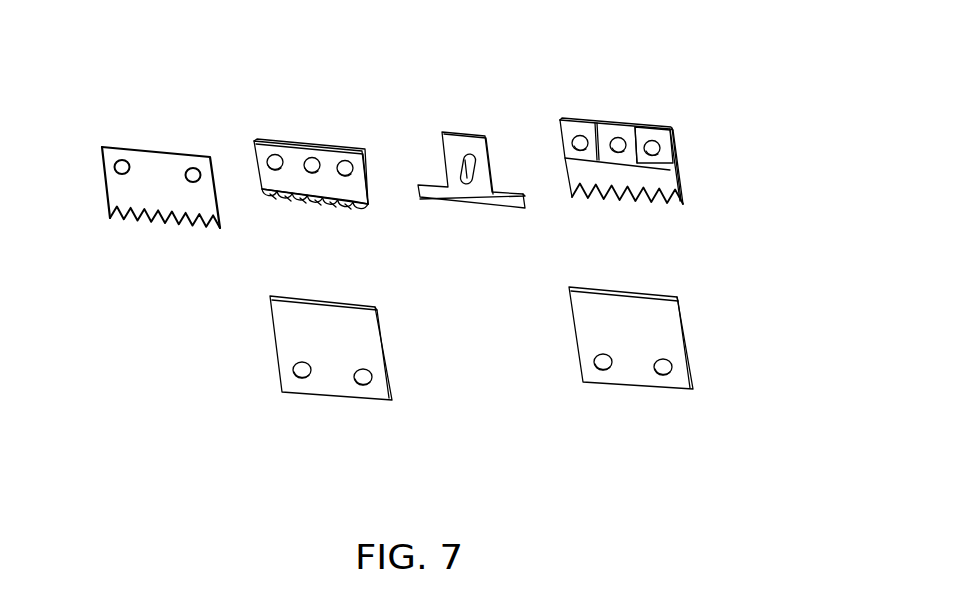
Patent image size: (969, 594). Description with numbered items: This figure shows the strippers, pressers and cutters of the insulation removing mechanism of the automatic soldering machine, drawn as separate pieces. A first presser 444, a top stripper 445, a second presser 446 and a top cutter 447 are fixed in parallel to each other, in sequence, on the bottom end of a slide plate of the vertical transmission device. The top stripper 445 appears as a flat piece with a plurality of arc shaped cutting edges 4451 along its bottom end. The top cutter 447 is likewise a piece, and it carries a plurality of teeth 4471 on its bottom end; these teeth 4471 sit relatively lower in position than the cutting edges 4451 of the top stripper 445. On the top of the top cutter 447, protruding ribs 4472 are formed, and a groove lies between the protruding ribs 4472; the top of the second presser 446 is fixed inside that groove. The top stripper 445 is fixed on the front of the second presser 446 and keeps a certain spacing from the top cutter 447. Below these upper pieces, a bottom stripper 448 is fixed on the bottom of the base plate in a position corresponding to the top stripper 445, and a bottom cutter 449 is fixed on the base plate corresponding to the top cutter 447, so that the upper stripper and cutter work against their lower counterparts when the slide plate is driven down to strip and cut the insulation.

The first presser 444 is at (153, 181).
The top stripper 445 is at (311, 163).
The arc shaped cutting edges 4451 is at (303, 197).
The second presser 446 is at (477, 150).
The top cutter 447 is at (684, 154).
The teeth 4471 is at (610, 193).
The protruding ribs 4472 is at (663, 157).
The bottom stripper 448 is at (292, 348).
The bottom cutter 449 is at (654, 348).